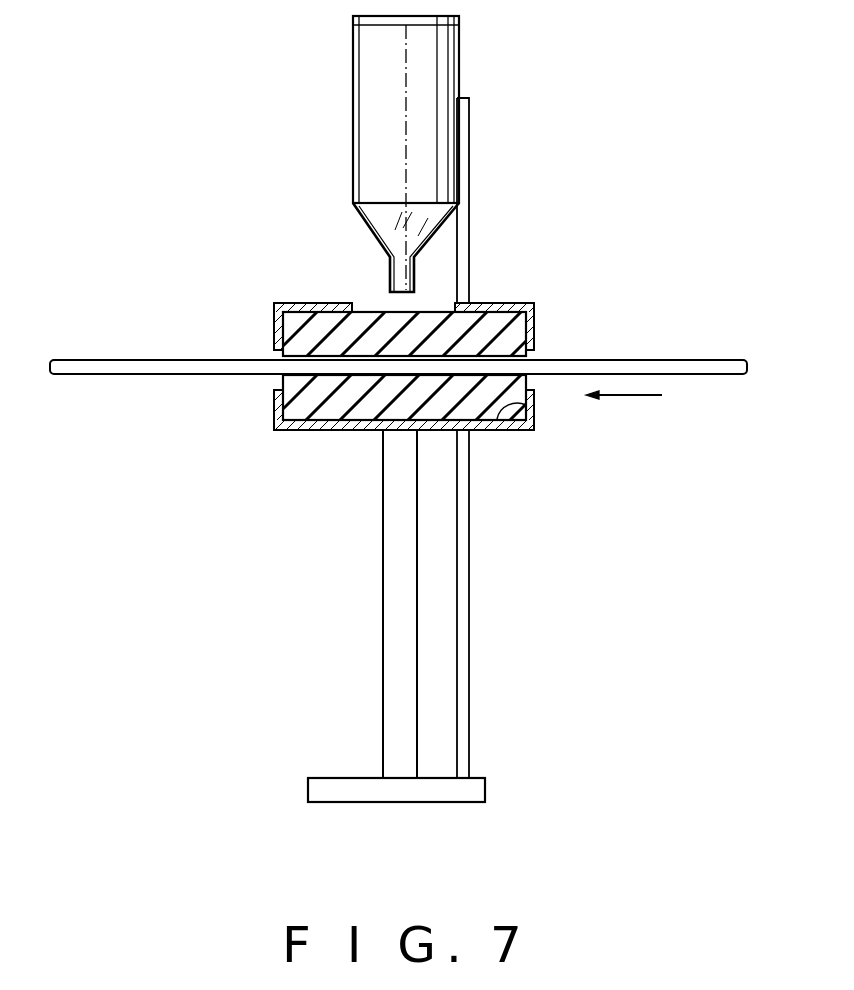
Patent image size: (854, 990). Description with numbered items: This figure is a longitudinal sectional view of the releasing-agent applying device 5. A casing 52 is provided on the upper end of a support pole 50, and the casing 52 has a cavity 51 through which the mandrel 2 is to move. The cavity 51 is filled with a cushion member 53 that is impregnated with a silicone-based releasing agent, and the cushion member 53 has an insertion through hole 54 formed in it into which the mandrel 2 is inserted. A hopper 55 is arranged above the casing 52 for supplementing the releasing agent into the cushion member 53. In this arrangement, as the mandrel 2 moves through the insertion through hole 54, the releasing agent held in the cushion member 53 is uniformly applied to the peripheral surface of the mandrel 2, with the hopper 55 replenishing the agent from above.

The mandrel 2 is at (651, 360).
The releasing-agent applying device 5 is at (522, 256).
The support pole 50 is at (417, 600).
The cavity 51 is at (508, 431).
The casing 52 is at (348, 431).
The cushion member 53 is at (297, 318).
The insertion through hole 54 is at (308, 374).
The hopper 55 is at (458, 68).